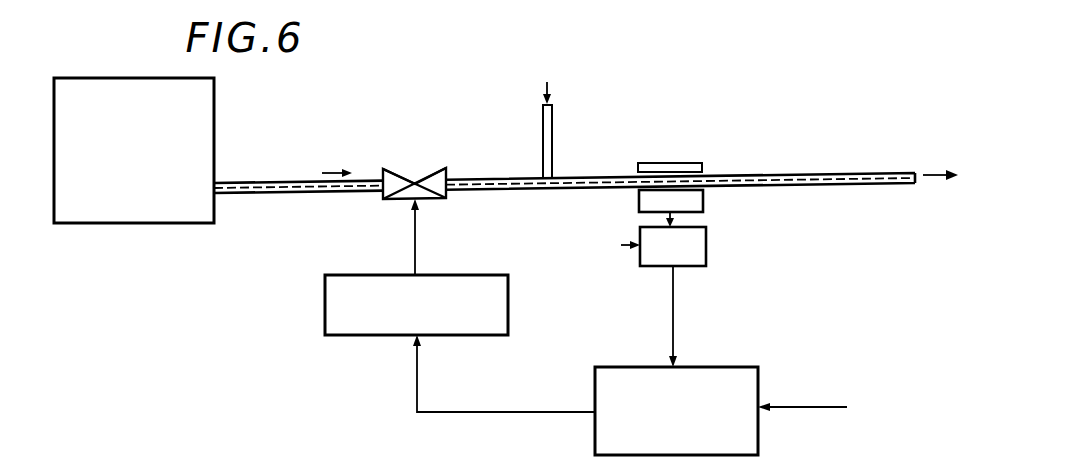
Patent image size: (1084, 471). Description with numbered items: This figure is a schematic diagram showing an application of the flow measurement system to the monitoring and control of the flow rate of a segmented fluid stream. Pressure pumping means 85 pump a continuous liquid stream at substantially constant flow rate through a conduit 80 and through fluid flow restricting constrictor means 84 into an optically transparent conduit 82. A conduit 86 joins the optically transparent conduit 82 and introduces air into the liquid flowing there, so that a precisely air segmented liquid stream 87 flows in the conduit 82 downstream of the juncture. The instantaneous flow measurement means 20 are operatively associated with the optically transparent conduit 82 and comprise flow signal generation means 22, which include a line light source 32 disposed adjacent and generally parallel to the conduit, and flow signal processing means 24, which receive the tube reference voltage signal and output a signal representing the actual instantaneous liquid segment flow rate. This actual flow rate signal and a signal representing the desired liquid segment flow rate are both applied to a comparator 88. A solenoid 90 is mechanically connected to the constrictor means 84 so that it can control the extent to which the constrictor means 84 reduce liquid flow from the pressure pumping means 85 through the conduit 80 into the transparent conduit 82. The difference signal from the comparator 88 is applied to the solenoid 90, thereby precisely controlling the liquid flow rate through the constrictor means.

The pressure pumping means 85 is at (83, 219).
The conduit 80 is at (352, 191).
The fluid flow restricting constrictor means 84 is at (392, 170).
The conduit 86 is at (554, 132).
The optically transparent conduit 82 is at (614, 186).
The line light source 32 is at (693, 146).
The air segmented liquid stream 87 is at (722, 176).
The flow signal generation means 22 is at (704, 198).
The flow signal processing means 24 is at (690, 256).
The instantaneous flow measurement means 20 is at (724, 235).
The solenoid 90 is at (506, 300).
The comparator 88 is at (752, 447).